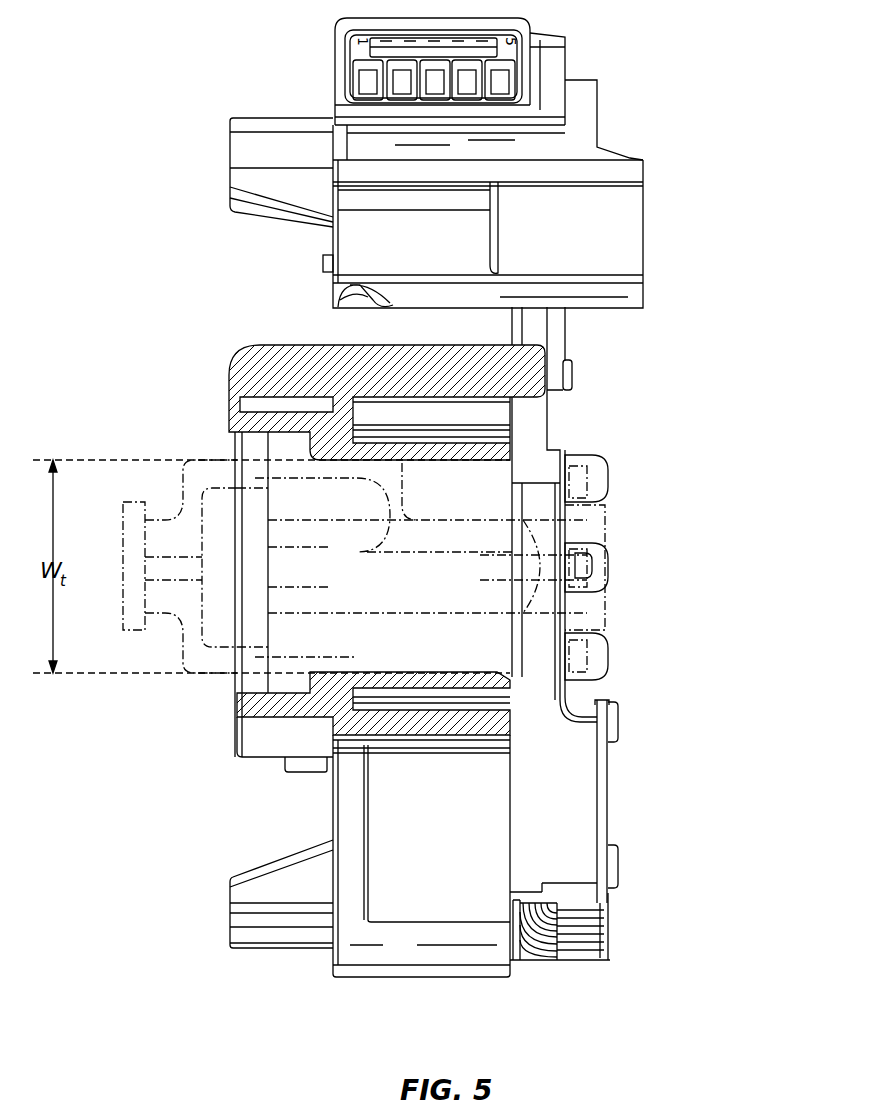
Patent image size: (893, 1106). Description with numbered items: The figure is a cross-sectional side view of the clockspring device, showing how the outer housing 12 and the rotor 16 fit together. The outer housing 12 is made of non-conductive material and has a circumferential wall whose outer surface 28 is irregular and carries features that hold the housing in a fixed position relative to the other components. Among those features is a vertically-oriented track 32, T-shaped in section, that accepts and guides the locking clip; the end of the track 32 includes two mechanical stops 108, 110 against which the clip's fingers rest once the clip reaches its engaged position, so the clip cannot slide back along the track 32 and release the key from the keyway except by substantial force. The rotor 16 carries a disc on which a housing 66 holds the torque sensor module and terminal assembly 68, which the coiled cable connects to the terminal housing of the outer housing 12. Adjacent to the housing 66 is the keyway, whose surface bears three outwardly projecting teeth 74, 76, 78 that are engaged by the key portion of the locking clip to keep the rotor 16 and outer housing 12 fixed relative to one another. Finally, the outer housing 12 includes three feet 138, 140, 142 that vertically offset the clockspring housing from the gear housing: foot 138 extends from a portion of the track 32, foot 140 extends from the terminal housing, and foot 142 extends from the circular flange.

The outer housing 12 is at (403, 937).
The rotor 16 is at (545, 420).
The outer surface 28 is at (461, 841).
The track 32 is at (476, 505).
The housing 66 is at (562, 797).
The torque sensor module and terminal assembly 68 is at (583, 942).
The tooth 74 is at (600, 470).
The tooth 76 is at (608, 564).
The tooth 78 is at (600, 659).
The mechanical stop 108 is at (250, 428).
The mechanical stop 110 is at (240, 690).
The foot 138 is at (265, 372).
The foot 140 is at (247, 150).
The foot 142 is at (250, 888).